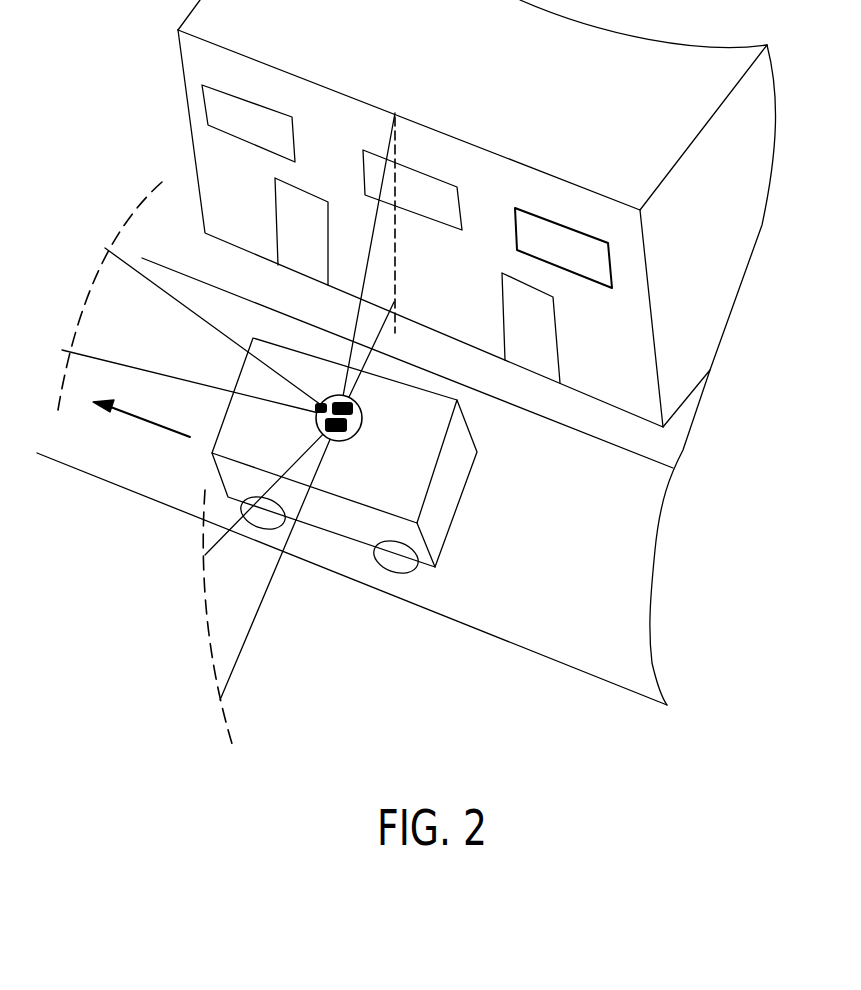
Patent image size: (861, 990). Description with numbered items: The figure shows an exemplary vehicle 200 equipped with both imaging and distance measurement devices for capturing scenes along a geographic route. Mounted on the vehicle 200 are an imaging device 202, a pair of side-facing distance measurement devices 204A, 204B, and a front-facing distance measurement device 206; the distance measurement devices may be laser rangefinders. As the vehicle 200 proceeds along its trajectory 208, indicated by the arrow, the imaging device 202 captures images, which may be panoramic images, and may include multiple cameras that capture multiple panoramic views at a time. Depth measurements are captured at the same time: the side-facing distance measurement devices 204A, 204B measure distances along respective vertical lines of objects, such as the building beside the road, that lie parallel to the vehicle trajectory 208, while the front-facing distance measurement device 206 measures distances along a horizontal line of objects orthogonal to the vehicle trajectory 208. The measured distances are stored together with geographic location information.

The vehicle 200 is at (460, 502).
The imaging device 202 is at (353, 438).
The side-facing distance measurement device 204A is at (363, 410).
The side-facing distance measurement device 204B is at (350, 426).
The front-facing distance measurement device 206 is at (313, 412).
The vehicle trajectory 208 is at (147, 423).